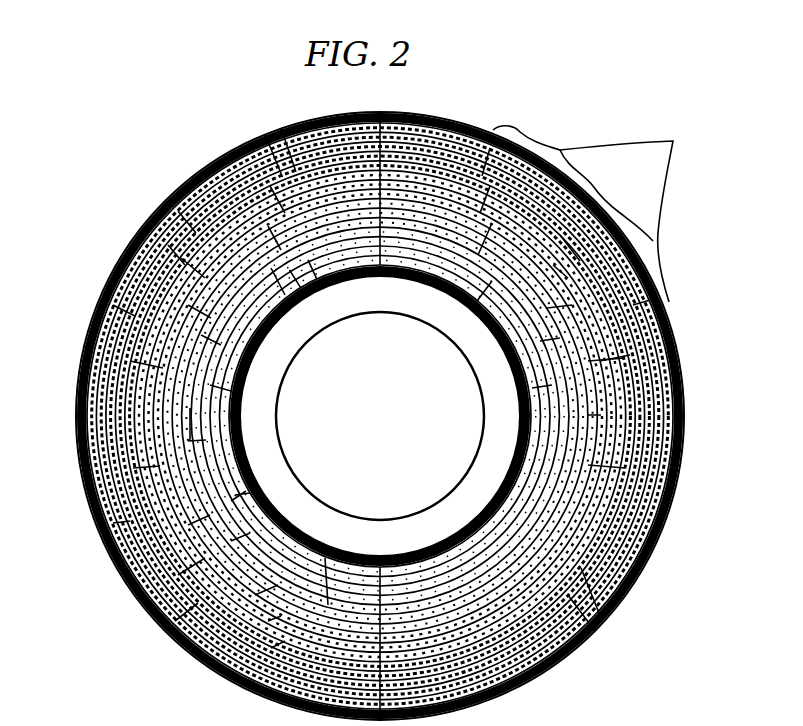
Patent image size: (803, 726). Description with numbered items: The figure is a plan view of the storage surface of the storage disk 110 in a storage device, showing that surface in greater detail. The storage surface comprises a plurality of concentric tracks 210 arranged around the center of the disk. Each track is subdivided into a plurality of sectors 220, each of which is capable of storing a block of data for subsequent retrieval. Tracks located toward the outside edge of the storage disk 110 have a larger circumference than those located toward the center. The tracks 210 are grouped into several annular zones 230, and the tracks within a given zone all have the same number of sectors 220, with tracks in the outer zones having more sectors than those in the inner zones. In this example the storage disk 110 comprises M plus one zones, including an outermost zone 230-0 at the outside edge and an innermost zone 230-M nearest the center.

The storage disk 110 is at (128, 180).
The concentric tracks 210 is at (592, 612).
The sectors 220 is at (606, 214).
The annular zones 230 is at (596, 451).
The outermost zone 230-0 is at (264, 123).
The innermost zone 230-M is at (302, 280).